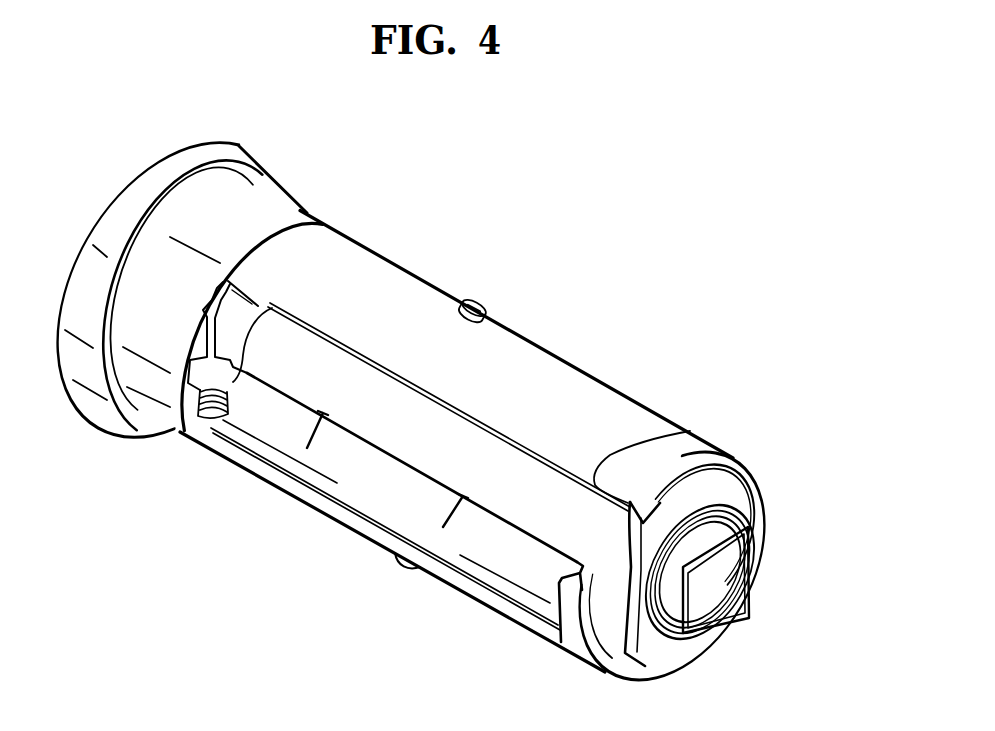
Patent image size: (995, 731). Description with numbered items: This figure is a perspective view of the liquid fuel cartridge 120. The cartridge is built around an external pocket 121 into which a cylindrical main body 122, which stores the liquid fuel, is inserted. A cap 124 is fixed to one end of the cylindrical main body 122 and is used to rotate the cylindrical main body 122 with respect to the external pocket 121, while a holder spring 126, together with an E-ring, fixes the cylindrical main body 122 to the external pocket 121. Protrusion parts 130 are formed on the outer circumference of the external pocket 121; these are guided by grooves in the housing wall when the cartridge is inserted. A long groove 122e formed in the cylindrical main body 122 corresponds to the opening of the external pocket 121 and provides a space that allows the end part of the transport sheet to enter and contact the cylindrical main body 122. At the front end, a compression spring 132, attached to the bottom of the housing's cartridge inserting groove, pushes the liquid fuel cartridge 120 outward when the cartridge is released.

The liquid fuel cartridge 120 is at (330, 119).
The external pocket 121 is at (537, 388).
The cylindrical main body 122 is at (560, 463).
The long groove 122e is at (690, 431).
The cap 124 is at (117, 237).
The holder spring 126 is at (327, 245).
The protrusion parts 130 is at (474, 303).
The compression spring 132 is at (762, 562).